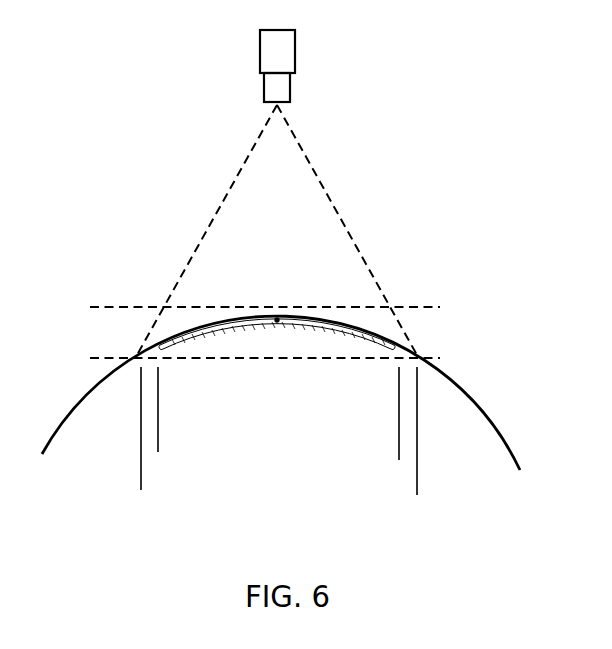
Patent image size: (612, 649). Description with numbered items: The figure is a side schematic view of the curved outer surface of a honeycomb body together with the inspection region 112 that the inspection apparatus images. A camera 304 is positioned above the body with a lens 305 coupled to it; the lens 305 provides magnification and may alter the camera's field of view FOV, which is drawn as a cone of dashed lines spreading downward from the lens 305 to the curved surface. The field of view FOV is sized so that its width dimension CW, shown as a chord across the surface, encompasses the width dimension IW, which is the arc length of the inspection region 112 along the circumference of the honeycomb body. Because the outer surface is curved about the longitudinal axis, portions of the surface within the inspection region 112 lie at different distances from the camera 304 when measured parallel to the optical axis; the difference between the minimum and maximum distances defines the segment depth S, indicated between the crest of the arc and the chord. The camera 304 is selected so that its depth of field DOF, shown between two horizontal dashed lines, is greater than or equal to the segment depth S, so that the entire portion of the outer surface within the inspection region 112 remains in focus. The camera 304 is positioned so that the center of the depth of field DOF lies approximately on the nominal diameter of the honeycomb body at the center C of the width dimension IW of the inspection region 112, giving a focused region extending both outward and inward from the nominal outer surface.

The camera 304 is at (288, 44).
The lens 305 is at (291, 87).
The inspection region 112 is at (208, 322).
The field of view FOV is at (328, 190).
The depth of field DOF is at (444, 307).
The center of the width dimension C is at (277, 320).
The segment depth S is at (277, 323).
The width dimension of the inspection region IW is at (399, 418).
The width dimension of the field of view CW is at (417, 483).